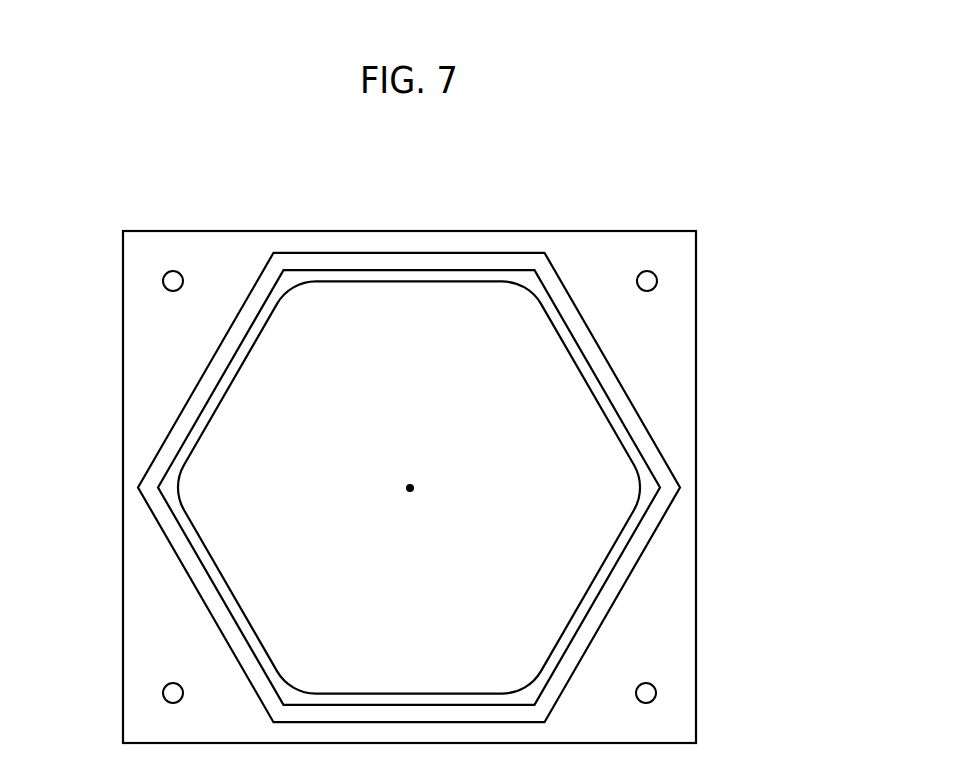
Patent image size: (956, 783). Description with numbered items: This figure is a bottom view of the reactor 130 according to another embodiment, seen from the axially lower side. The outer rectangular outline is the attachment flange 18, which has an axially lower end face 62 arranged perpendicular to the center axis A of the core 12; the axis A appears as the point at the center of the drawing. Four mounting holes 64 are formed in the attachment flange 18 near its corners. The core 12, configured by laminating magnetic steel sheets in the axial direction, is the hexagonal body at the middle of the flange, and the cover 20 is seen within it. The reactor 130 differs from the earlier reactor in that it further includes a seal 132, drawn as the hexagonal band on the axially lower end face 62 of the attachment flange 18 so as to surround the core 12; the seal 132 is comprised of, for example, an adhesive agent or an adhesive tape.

The reactor 130 is at (874, 245).
The attachment flange 18 is at (613, 229).
The seal 132 is at (193, 566).
The core 12 is at (621, 432).
The cover 20 is at (575, 512).
The mounting holes 64 is at (165, 288).
The axially lower end face 62 is at (678, 365).
The center axis A is at (410, 488).